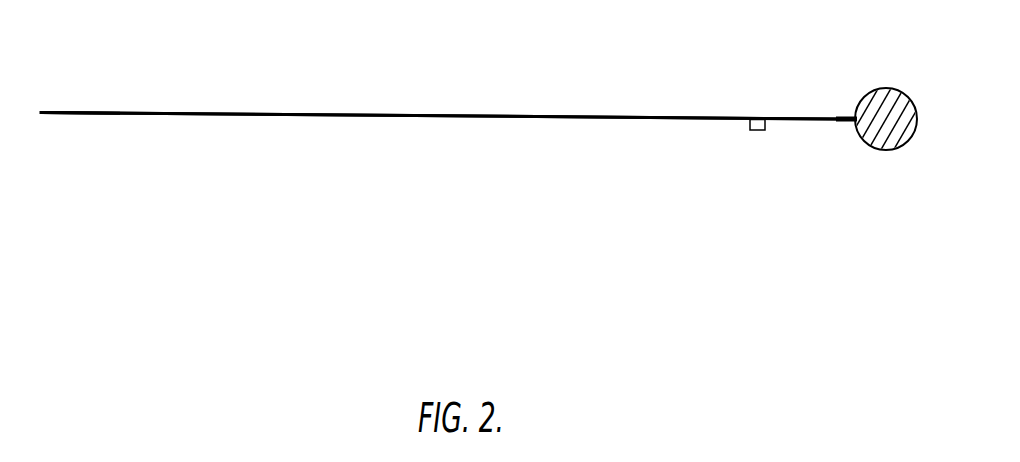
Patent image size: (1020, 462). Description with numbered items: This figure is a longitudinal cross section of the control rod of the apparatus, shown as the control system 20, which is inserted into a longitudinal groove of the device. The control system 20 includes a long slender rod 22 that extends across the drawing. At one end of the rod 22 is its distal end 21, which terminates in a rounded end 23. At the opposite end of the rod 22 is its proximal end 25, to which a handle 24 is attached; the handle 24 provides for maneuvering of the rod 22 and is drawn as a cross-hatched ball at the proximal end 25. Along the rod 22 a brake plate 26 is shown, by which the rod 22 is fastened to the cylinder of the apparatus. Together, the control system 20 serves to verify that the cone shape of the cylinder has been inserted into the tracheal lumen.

The control system 20 is at (538, 181).
The distal end 21 is at (62, 111).
The rod 22 is at (367, 113).
The rounded end 23 is at (46, 114).
The handle 24 is at (891, 105).
The proximal end 25 is at (846, 114).
The brake plate 26 is at (754, 131).